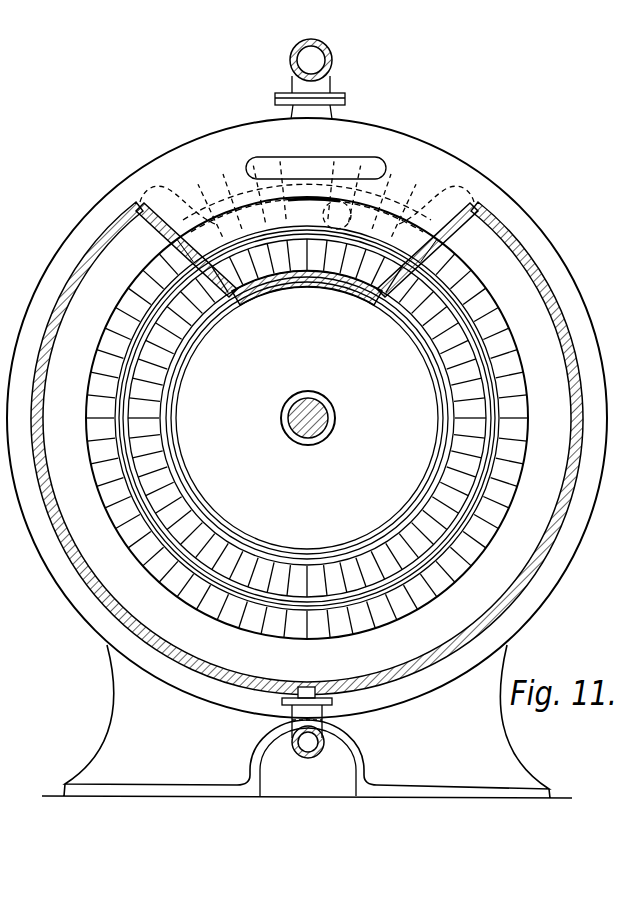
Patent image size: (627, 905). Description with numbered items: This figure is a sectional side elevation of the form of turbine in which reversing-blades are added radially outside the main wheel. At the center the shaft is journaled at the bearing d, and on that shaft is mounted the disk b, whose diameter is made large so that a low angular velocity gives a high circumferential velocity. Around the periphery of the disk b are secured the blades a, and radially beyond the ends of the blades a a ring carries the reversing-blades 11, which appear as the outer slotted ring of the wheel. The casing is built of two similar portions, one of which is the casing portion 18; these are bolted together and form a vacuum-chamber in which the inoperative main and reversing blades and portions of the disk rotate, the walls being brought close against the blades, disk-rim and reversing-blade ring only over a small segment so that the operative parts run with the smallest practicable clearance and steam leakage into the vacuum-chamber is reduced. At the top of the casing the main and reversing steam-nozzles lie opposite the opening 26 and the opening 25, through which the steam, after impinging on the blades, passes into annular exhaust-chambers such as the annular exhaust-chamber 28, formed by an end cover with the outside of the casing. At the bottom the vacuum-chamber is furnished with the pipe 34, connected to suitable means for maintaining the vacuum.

The reversing-blades 11 is at (303, 200).
The casing portion 18 is at (384, 692).
The opening 25 is at (379, 214).
The opening 26 is at (305, 283).
The annular exhaust-chamber 28 is at (307, 418).
The pipe 34 is at (305, 750).
The blades a is at (152, 447).
The disk b is at (307, 418).
The journal d is at (323, 436).